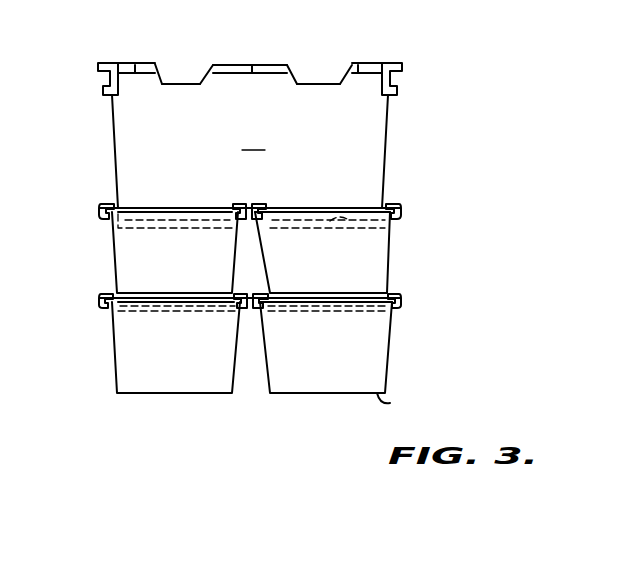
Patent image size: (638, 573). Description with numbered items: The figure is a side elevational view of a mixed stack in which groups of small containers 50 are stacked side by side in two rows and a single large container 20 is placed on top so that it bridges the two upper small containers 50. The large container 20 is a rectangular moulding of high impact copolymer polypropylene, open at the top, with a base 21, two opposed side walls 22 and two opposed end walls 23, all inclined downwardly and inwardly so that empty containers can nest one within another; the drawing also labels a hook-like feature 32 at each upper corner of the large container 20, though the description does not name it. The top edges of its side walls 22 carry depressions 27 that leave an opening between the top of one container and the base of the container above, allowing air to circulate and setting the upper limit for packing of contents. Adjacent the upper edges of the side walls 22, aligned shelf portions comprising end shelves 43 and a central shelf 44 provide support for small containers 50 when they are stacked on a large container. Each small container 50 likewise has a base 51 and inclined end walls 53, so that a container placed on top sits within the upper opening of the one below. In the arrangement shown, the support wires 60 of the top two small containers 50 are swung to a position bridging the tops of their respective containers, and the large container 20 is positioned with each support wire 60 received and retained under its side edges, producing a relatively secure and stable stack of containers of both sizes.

The large container 20 is at (248, 112).
The side wall 22 is at (250, 107).
The end wall 23 is at (112, 128).
The lid hook 32 is at (101, 93).
The end shelf 43 is at (134, 65).
The depression 27 is at (177, 82).
The central shelf 44 is at (252, 65).
The small container 50 is at (248, 323).
The end wall 53 is at (203, 268).
The support wire 60 is at (161, 232).
The base 21 is at (338, 232).
The base 51 is at (136, 314).